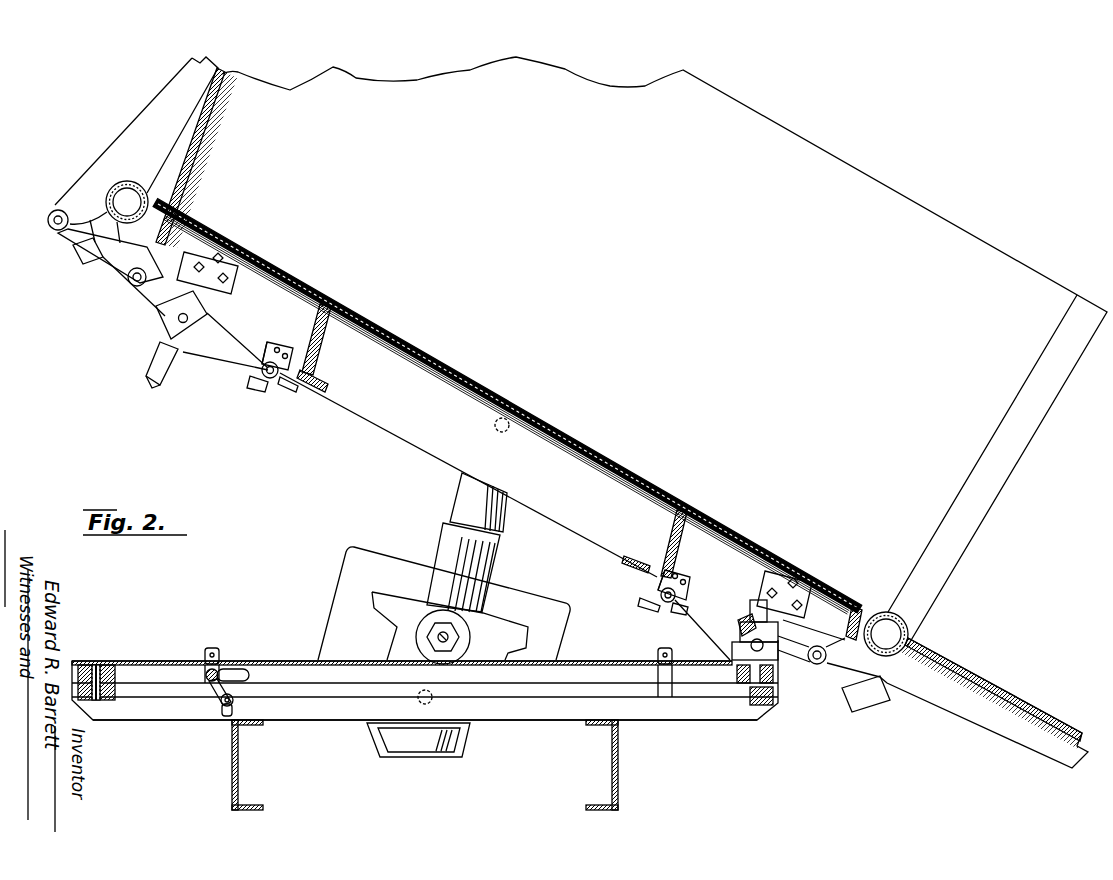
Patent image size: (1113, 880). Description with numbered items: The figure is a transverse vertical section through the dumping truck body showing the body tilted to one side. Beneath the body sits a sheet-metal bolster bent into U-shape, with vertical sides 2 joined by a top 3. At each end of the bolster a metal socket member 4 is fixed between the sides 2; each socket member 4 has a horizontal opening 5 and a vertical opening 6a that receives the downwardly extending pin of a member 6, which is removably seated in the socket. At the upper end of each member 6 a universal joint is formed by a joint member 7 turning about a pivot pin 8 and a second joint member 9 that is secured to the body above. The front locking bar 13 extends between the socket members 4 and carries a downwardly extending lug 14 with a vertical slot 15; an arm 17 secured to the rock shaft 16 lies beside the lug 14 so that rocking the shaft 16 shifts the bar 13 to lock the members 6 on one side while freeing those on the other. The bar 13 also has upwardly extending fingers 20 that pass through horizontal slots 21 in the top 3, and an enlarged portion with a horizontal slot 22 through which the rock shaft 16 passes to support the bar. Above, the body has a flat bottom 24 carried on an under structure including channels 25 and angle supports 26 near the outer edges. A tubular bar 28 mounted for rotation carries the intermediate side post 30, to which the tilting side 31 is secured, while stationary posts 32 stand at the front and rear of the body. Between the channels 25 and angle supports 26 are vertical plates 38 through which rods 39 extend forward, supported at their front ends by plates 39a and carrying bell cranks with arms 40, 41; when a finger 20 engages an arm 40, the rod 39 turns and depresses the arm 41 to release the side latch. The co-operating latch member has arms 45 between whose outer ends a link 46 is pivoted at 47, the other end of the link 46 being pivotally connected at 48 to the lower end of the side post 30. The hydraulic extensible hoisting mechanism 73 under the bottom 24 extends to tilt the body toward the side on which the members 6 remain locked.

The vertical sides 2 is at (182, 713).
The top 3 is at (273, 661).
The socket member 4 is at (120, 676).
The horizontal opening 5 is at (87, 687).
The member 6 is at (160, 345).
The vertical opening 6a is at (93, 665).
The joint member 7 is at (212, 317).
The pivot pin 8 is at (176, 325).
The joint member 9 is at (228, 293).
The locking bar 13 is at (313, 697).
The lug 14 is at (227, 714).
The vertical slot 15 is at (234, 708).
The rock shaft 16 is at (212, 688).
The arm 17 is at (252, 677).
The finger 20 is at (212, 650).
The horizontal slot 21 is at (187, 658).
The horizontal slot 22 is at (222, 668).
The flat bottom 24 is at (446, 376).
The channel 25 is at (320, 362).
The angle support 26 is at (196, 225).
The tubular bar 28 is at (131, 181).
The intermediate side post 30 is at (158, 113).
The side 31 is at (206, 108).
The stationary post 32 is at (975, 520).
The vertical metal plate 38 is at (218, 362).
The rod 39 is at (270, 380).
The plate 39a is at (283, 348).
The arm 40 is at (266, 381).
The arm 41 is at (300, 392).
The arm 45 is at (162, 314).
The link 46 is at (96, 256).
The pivot 47 is at (131, 285).
The pivotal connection 48 is at (52, 227).
The hydraulic extensible hoisting mechanism 73 is at (492, 568).